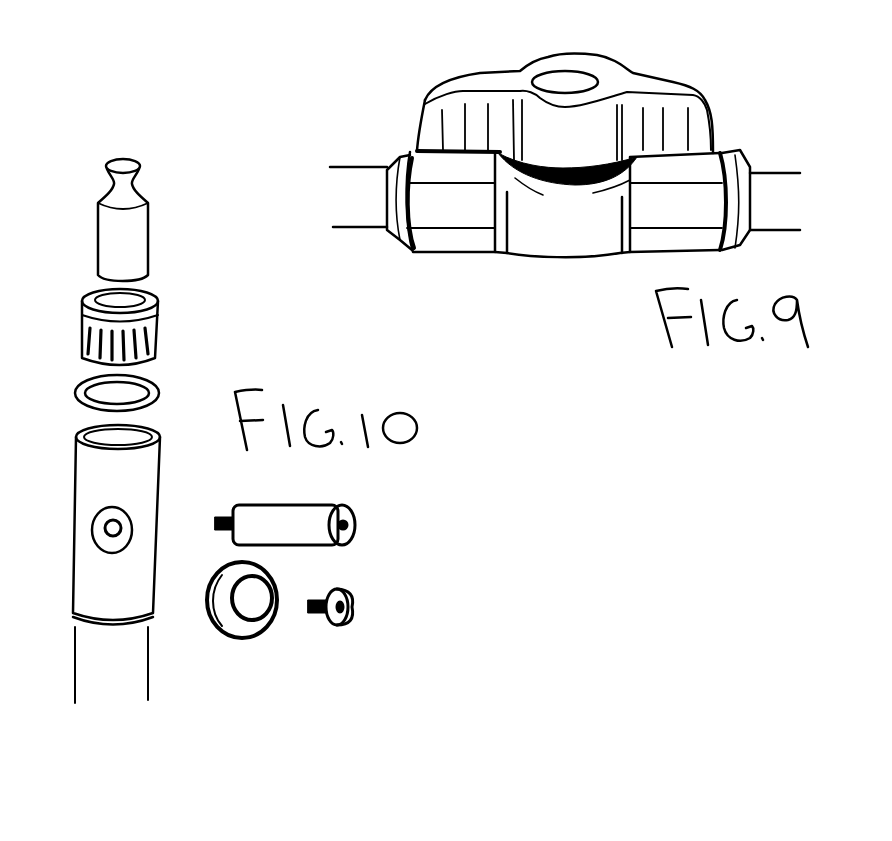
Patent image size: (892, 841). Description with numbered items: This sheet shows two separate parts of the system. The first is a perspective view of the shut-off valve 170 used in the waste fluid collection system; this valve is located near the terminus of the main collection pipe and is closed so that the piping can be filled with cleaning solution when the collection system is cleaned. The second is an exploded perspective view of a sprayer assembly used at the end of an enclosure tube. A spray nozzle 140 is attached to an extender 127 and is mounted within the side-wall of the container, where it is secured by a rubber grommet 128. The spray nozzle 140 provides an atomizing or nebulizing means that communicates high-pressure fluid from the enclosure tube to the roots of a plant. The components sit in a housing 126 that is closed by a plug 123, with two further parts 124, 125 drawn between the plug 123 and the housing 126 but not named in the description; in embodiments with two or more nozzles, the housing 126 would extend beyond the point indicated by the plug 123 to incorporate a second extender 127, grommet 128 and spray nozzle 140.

In FIG. 9, the shut-off valve 170 is at (678, 72).
In FIG. 10, the plug 123 is at (135, 238).
In FIG. 10, the filter element 124 is at (148, 330).
In FIG. 10, the o-ring 125 is at (153, 387).
In FIG. 10, the housing 126 is at (160, 488).
In FIG. 10, the extender 127 is at (313, 508).
In FIG. 10, the rubber grommet 128 is at (248, 633).
In FIG. 10, the spray nozzle 140 is at (347, 588).